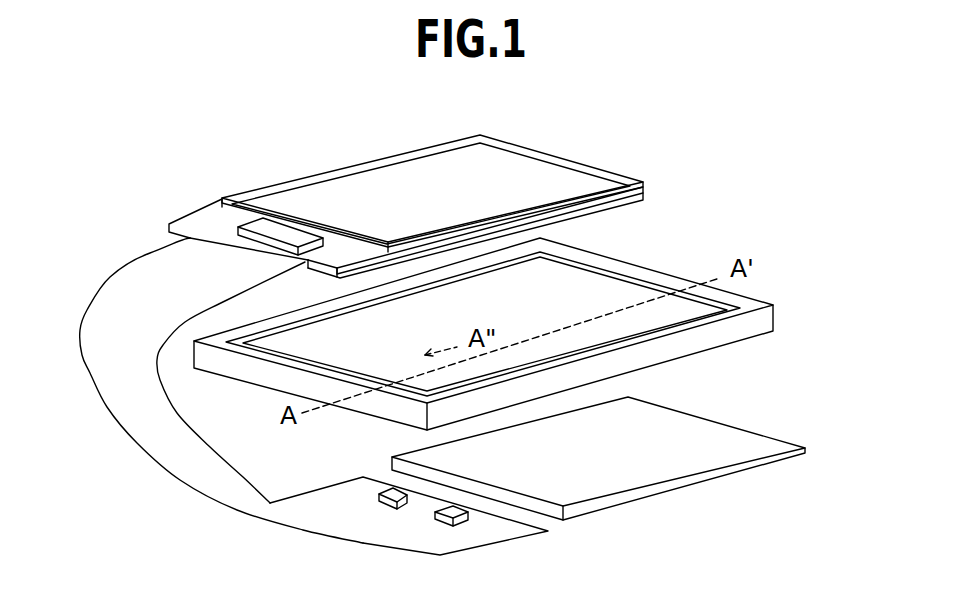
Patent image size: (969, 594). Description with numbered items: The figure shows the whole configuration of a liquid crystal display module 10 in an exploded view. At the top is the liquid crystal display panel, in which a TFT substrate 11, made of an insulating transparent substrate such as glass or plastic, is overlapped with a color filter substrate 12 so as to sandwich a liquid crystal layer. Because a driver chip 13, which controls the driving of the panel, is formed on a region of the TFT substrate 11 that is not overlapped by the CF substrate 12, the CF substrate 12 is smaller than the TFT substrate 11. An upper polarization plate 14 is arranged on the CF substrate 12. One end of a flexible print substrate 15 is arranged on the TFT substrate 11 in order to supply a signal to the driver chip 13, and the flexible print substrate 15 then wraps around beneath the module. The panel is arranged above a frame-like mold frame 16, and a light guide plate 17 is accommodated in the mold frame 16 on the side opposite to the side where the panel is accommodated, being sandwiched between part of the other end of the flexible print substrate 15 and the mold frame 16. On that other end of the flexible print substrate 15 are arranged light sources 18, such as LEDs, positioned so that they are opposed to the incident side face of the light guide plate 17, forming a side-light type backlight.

The liquid crystal display module 10 is at (805, 122).
The TFT substrate 11 is at (643, 200).
The color filter substrate 12 is at (644, 184).
The driver chip 13 is at (262, 224).
The upper polarization plate 14 is at (526, 166).
The flexible print substrate 15 is at (153, 262).
The mold frame 16 is at (563, 252).
The light guide plate 17 is at (673, 418).
The light sources 18 is at (449, 507).